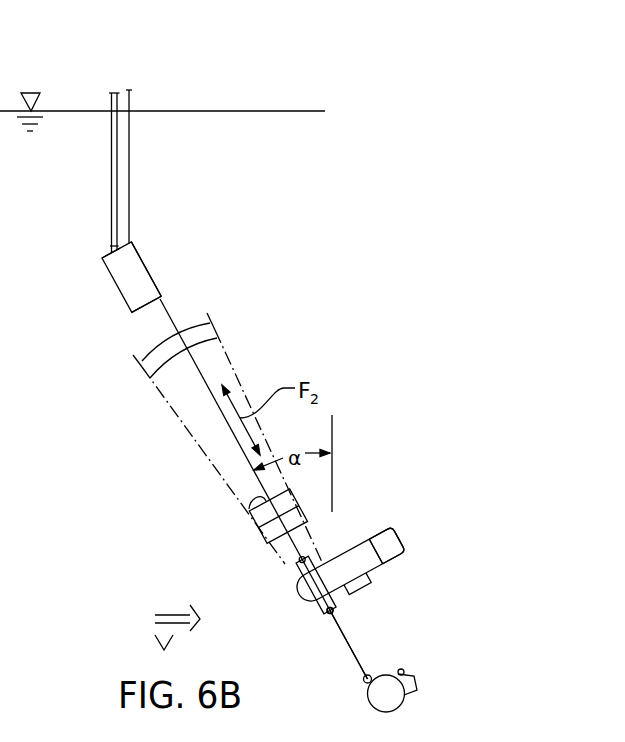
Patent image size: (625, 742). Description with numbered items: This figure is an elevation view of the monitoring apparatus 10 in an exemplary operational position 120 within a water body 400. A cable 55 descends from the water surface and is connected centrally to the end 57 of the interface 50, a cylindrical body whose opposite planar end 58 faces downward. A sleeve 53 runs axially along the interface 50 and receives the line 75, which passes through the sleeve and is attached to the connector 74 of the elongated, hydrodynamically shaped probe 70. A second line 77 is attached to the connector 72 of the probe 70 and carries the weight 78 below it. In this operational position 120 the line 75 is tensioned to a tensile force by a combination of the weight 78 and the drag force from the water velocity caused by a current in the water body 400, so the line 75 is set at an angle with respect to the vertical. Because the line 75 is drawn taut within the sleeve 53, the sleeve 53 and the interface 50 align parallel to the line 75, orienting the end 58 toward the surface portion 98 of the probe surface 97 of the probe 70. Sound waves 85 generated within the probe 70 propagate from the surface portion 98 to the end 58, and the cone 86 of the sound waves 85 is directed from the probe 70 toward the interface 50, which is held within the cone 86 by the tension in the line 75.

The monitoring apparatus 10 is at (343, 63).
The operational position 120 is at (327, 250).
The water body 400 is at (49, 185).
The cable 55 is at (110, 101).
The interface 50 is at (123, 283).
The end 57 is at (112, 252).
The sleeve 53 is at (143, 263).
The end 58 is at (144, 311).
The line 75 is at (237, 441).
The cone 86 is at (227, 480).
The sound waves 85 is at (249, 511).
The connector 74 is at (304, 559).
The connector 72 is at (326, 612).
The probe 70 is at (301, 587).
The surface portion 98 is at (320, 550).
The probe surface 97 is at (369, 567).
The line 77 is at (347, 641).
The weight 78 is at (377, 698).